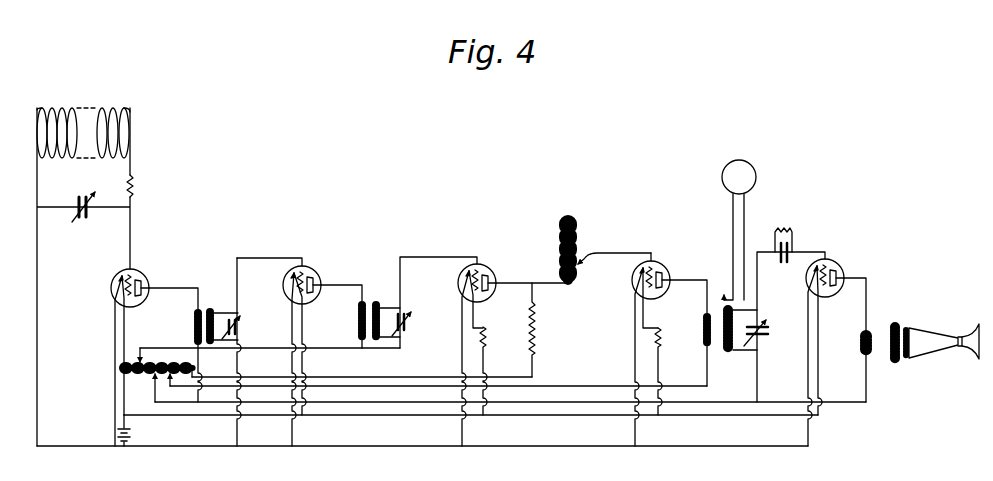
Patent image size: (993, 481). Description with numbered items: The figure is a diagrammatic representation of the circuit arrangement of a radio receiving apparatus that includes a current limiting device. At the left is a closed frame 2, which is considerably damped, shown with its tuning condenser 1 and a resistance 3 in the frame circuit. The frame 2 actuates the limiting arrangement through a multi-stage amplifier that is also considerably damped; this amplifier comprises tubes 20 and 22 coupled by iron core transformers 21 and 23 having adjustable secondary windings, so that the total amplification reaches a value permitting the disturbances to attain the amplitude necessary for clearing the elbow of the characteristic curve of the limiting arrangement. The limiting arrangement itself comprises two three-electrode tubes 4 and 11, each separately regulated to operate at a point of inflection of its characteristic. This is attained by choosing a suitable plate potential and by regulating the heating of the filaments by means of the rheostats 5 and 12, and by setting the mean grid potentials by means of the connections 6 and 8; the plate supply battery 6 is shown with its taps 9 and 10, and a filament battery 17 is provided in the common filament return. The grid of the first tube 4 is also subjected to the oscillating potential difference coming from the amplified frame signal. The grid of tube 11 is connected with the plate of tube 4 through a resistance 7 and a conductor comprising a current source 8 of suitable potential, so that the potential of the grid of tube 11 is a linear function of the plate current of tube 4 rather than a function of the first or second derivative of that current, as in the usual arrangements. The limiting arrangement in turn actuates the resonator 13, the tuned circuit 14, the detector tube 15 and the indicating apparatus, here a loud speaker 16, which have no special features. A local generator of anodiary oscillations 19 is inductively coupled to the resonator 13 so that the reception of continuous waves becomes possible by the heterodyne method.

The variable tuning condenser 1 is at (83, 200).
The closed frame 2 is at (83, 120).
The grid leak resistance 3 is at (136, 187).
The three-electrode tube 4 is at (484, 351).
The rheostat 5 is at (490, 371).
The connection 6 is at (158, 355).
The resistance 7 is at (539, 330).
The current source 8 is at (556, 252).
The battery tap 9 is at (166, 388).
The battery tap 10 is at (190, 375).
The three-electrode tube 11 is at (642, 349).
The rheostat 12 is at (669, 371).
The resonator 13 is at (737, 340).
The tuned circuit 14 is at (791, 306).
The output vacuum tube 15 is at (836, 349).
The loud speaker 16 is at (922, 346).
The filament battery 17 is at (134, 430).
The local generator of anodiary oscillations 19 is at (739, 230).
The radio frequency amplifier tube 20 is at (156, 353).
The iron core transformer 21 is at (219, 316).
The radio frequency amplifier tube 22 is at (299, 352).
The iron core transformer 23 is at (386, 314).